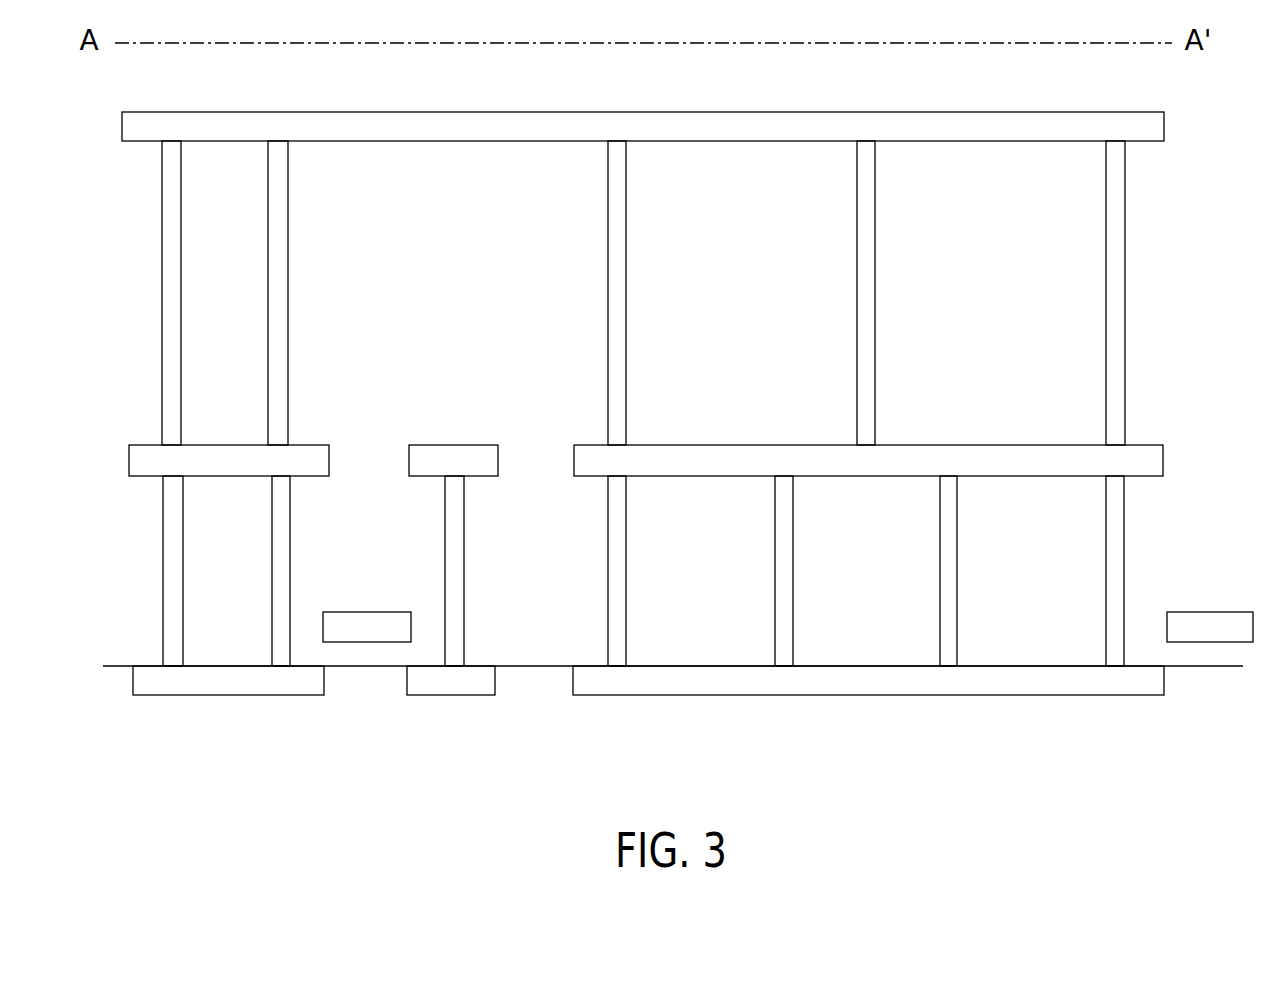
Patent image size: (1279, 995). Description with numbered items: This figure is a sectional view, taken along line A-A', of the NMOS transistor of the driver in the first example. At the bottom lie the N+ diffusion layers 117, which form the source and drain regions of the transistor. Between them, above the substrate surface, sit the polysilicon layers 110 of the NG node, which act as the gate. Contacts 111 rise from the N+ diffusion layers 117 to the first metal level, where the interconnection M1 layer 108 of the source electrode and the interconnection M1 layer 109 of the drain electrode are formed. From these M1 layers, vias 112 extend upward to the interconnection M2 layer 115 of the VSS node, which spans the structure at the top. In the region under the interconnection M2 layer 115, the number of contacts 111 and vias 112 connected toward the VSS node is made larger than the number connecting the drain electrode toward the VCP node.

The interconnection M2 layer of a VSS node 115 is at (334, 112).
The via 112 is at (1157, 280).
The interconnection M1 layer of a source electrode 108 is at (721, 419).
The interconnection M1 layer of a drain electrode 109 is at (458, 445).
The contact 111 is at (1156, 539).
The polysilicon layer of an NG node 110 is at (374, 612).
The N+ diffusion layer 117 is at (202, 695).